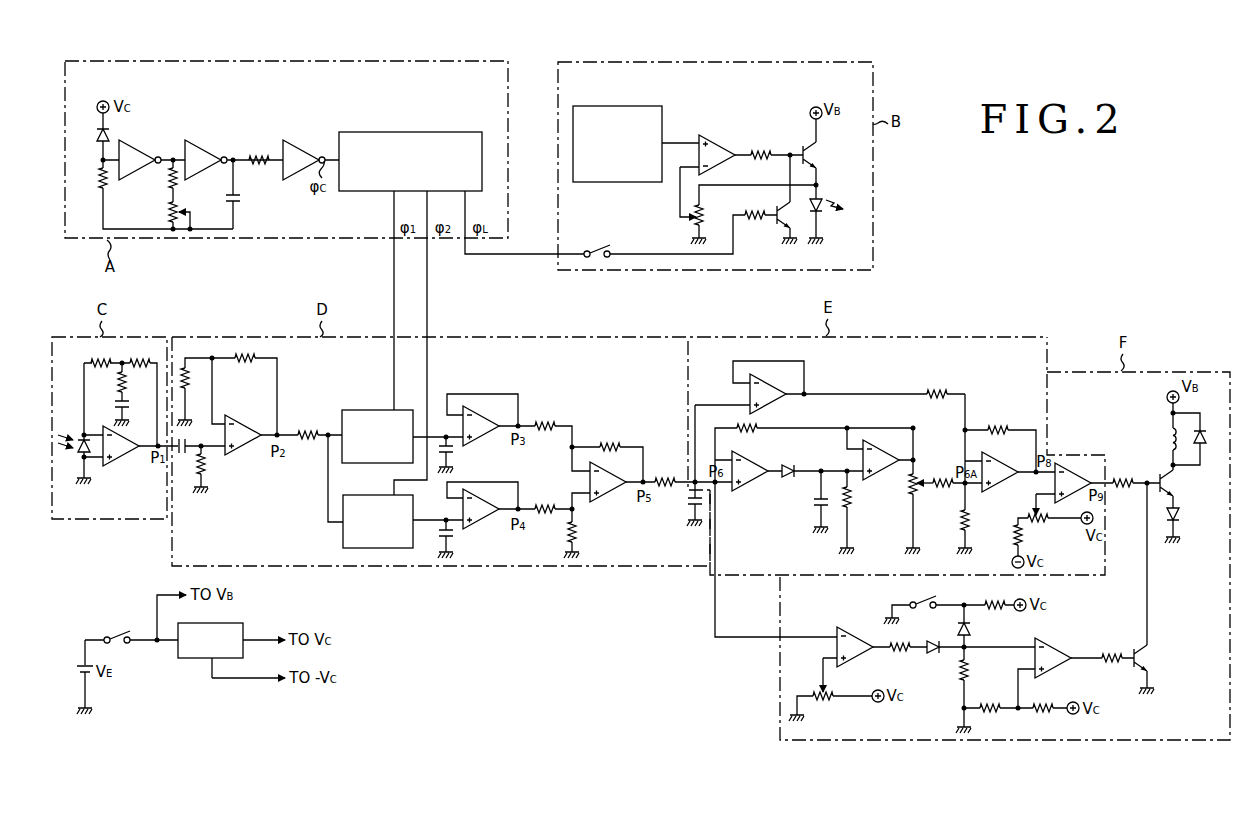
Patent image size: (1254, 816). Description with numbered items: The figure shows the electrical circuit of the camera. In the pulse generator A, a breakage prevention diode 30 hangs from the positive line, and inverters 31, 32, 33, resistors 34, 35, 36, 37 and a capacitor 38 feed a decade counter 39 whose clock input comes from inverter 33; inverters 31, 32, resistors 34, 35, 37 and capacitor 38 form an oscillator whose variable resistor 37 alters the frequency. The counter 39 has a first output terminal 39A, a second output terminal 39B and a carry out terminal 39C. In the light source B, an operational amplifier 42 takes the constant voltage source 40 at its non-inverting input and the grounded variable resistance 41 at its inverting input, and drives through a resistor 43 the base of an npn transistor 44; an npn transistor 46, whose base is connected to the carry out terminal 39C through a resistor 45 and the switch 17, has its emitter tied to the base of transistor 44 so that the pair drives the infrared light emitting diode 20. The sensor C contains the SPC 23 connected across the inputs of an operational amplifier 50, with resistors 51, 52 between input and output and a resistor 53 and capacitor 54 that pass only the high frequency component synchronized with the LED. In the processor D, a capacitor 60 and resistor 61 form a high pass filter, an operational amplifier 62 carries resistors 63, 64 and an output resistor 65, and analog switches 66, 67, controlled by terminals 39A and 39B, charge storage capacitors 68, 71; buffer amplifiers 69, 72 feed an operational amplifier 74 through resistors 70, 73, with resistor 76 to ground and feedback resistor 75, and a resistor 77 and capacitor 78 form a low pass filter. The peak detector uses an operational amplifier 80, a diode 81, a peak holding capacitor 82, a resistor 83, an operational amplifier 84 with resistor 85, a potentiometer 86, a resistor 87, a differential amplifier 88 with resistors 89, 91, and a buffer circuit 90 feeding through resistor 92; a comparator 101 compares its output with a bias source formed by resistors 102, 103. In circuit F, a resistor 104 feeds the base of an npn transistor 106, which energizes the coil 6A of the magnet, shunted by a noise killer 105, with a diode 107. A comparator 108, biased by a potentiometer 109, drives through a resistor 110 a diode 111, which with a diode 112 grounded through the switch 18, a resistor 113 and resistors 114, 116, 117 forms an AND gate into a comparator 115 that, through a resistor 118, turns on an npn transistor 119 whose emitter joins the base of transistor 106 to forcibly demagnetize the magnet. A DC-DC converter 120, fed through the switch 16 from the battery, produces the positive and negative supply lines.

The breakage prevention diode 30 is at (93, 136).
The inverter 31 is at (140, 156).
The inverter 32 is at (206, 156).
The inverter 33 is at (304, 155).
The resistor 34 is at (94, 180).
The resistor 35 is at (164, 179).
The resistor 36 is at (258, 151).
The variable resistor 37 is at (169, 215).
The capacitor 38 is at (244, 202).
The decade counter 39 is at (345, 191).
The first output terminal 39A is at (393, 194).
The second output terminal 39B is at (427, 194).
The carry out terminal 39C is at (466, 194).
The constant voltage source 40 is at (607, 182).
The variable resistance 41 is at (708, 215).
The operational amplifier 42 is at (717, 152).
The resistor 43 is at (761, 145).
The npn transistor 44 is at (821, 151).
The resistor 45 is at (754, 204).
The npn transistor 46 is at (793, 215).
The infrared light emitting diode 20 is at (826, 195).
The switch 17 is at (602, 251).
The SPC 23 is at (74, 452).
The operational amplifier 50 is at (121, 452).
The resistor 51 is at (100, 354).
The resistor 52 is at (140, 354).
The resistor 53 is at (131, 382).
The capacitor 54 is at (133, 407).
The capacitor 60 is at (182, 456).
The resistor 61 is at (210, 466).
The operational amplifier 62 is at (246, 433).
The resistor 63 is at (246, 369).
The resistor 64 is at (194, 380).
The resistor 65 is at (307, 427).
The analog switch 66 is at (353, 410).
The analog switch 67 is at (343, 535).
The capacitor 68 is at (454, 450).
The operational amplifier 69 is at (481, 423).
The resistor 70 is at (545, 417).
The capacitor 71 is at (437, 536).
The operational amplifier 72 is at (483, 508).
The resistor 73 is at (545, 501).
The operational amplifier 74 is at (608, 487).
The resistor 75 is at (610, 438).
The resistor 76 is at (581, 532).
The resistor 77 is at (665, 472).
The capacitor 78 is at (686, 504).
The operational amplifier 80 is at (750, 477).
The diode 81 is at (786, 461).
The capacitor 82 is at (810, 504).
The resistor 83 is at (856, 499).
The operational amplifier 84 is at (882, 459).
The resistor 85 is at (747, 438).
The potentiometer 86 is at (903, 485).
The resistor 87 is at (941, 491).
The differential amplifier 88 is at (1003, 472).
The resistor 89 is at (975, 520).
The buffer circuit 90 is at (769, 392).
The resistor 91 is at (998, 422).
The resistor 92 is at (937, 386).
The comparator 101 is at (1079, 481).
The resistor 102 is at (1045, 527).
The resistor 103 is at (1004, 536).
The resistor 104 is at (1123, 474).
The noise killer 105 is at (1212, 428).
The coil of the magnet 6A is at (1163, 439).
The npn transistor 106 is at (1182, 483).
The diode 107 is at (1188, 513).
The comparator 108 is at (856, 642).
The potentiometer 109 is at (828, 707).
The resistor 110 is at (898, 656).
The diode 111 is at (937, 659).
The diode 112 is at (978, 631).
The resistor 113 is at (997, 595).
The resistor 114 is at (977, 670).
The comparator 115 is at (1056, 654).
The resistor 116 is at (990, 699).
The resistor 117 is at (1043, 699).
The resistor 118 is at (1112, 648).
The npn transistor 119 is at (1156, 658).
The switch 18 is at (919, 595).
The switch 16 is at (117, 629).
The DC-DC converter 120 is at (238, 623).